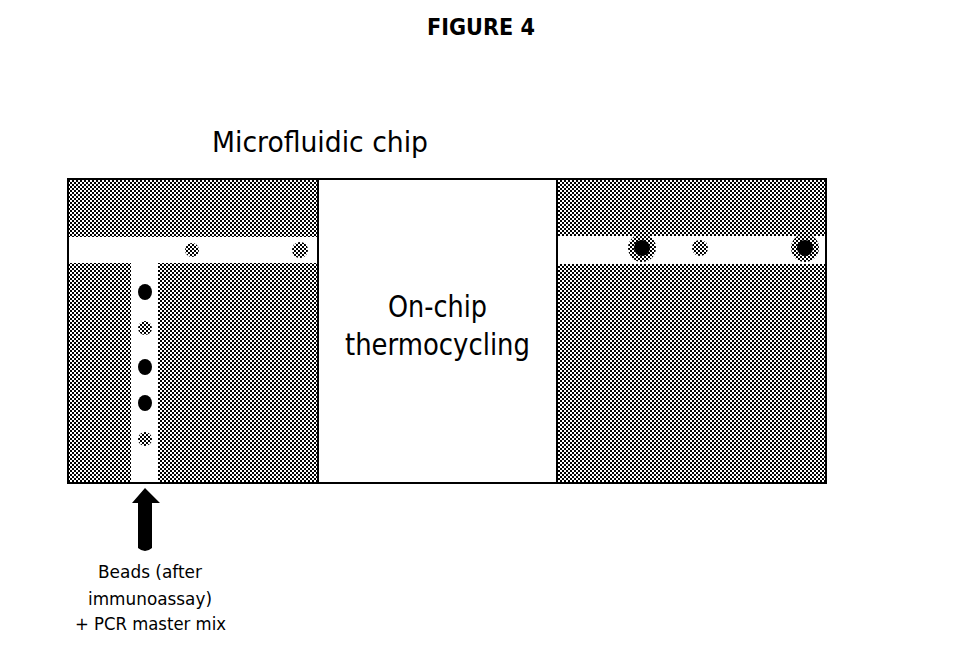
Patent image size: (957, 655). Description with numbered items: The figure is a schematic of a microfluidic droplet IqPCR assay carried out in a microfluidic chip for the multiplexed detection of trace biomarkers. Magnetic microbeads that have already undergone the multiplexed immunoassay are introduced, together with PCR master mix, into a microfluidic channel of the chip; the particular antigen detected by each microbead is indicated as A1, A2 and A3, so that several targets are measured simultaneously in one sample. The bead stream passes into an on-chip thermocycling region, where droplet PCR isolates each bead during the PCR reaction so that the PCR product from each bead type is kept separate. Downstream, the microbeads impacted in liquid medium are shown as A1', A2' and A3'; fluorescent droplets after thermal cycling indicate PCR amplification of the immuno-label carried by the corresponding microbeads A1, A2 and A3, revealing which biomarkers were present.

The antigen A1 microbead A1 is at (186, 379).
The antigen A2 microbead A2 is at (185, 367).
The antigen A3 microbead A3 is at (112, 347).
The microbead A1' in liquid medium A1' is at (484, 216).
The microbead A2' in liquid medium A2' is at (429, 223).
The microbead A3' in liquid medium A3' is at (540, 227).